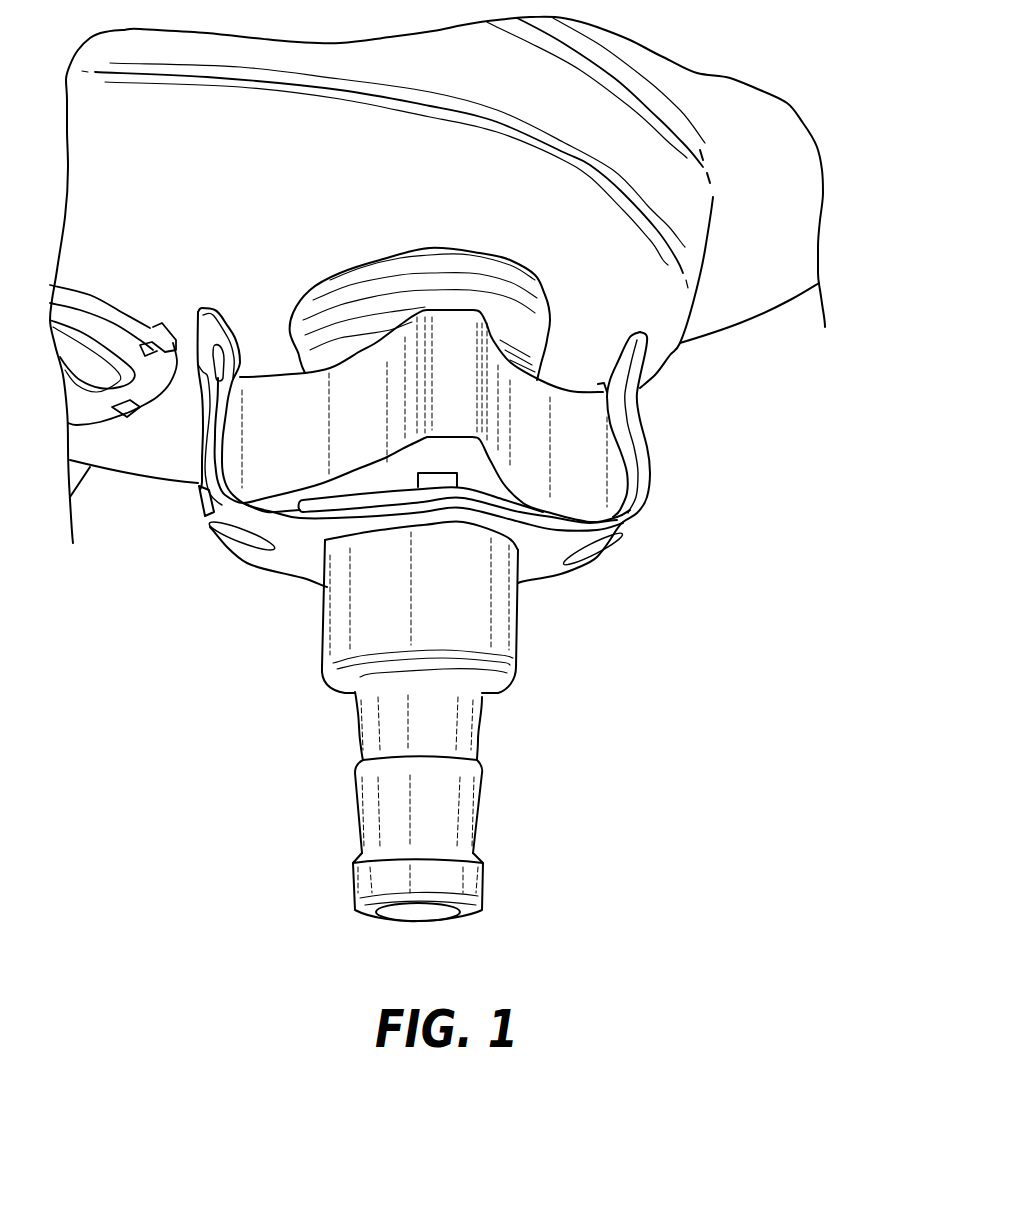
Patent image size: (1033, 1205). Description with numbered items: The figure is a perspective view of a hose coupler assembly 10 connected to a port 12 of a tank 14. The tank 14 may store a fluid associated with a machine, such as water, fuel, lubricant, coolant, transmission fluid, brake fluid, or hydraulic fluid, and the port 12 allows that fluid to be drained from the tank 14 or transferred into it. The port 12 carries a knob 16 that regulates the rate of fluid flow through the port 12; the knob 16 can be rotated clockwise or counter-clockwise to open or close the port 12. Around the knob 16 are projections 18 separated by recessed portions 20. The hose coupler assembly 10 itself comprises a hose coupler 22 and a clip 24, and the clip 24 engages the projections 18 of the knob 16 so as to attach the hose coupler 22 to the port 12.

The hose coupler assembly 10 is at (558, 656).
The port 12 is at (537, 347).
The tank 14 is at (353, 163).
The knob 16 is at (461, 466).
The projections 18 is at (450, 320).
The recessed portions 20 is at (363, 373).
The hose coupler 22 is at (458, 600).
The clip 24 is at (530, 568).